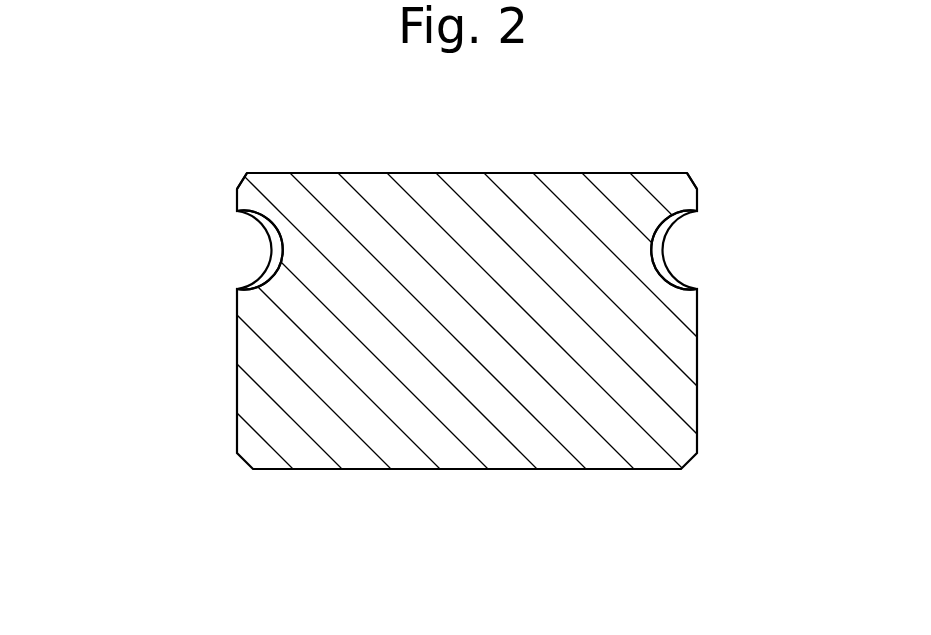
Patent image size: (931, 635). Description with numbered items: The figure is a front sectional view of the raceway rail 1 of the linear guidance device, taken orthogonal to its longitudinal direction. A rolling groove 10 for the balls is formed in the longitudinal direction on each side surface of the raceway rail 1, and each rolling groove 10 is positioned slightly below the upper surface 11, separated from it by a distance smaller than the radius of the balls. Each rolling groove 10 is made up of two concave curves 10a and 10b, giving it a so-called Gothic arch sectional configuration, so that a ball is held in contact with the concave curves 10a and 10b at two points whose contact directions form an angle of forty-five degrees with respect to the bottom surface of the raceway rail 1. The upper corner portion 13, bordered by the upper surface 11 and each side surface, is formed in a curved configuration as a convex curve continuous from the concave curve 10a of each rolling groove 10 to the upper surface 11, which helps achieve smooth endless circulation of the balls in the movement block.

The raceway rail 1 is at (456, 486).
The upper surface 11 is at (475, 173).
The upper corner portion 13 is at (242, 182).
The rolling groove 10 is at (138, 197).
The concave curve 10a is at (256, 218).
The concave curve 10b is at (253, 287).